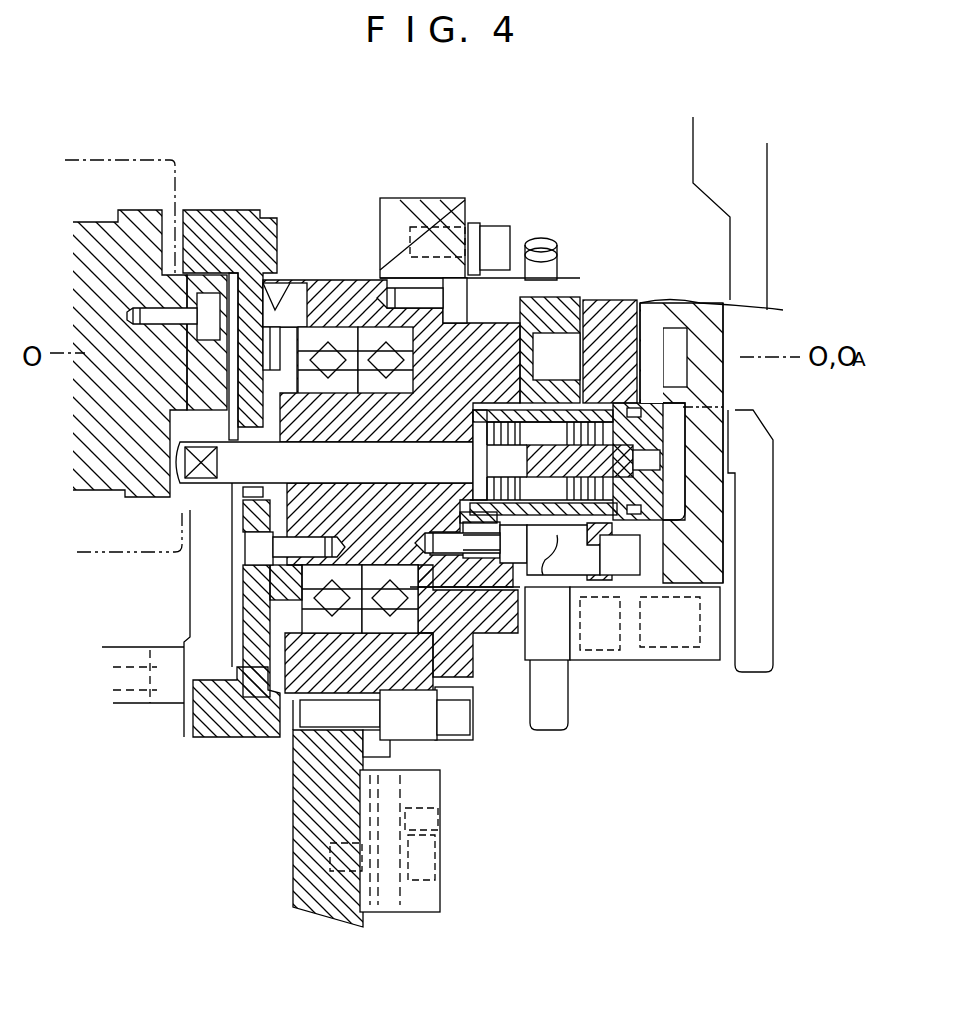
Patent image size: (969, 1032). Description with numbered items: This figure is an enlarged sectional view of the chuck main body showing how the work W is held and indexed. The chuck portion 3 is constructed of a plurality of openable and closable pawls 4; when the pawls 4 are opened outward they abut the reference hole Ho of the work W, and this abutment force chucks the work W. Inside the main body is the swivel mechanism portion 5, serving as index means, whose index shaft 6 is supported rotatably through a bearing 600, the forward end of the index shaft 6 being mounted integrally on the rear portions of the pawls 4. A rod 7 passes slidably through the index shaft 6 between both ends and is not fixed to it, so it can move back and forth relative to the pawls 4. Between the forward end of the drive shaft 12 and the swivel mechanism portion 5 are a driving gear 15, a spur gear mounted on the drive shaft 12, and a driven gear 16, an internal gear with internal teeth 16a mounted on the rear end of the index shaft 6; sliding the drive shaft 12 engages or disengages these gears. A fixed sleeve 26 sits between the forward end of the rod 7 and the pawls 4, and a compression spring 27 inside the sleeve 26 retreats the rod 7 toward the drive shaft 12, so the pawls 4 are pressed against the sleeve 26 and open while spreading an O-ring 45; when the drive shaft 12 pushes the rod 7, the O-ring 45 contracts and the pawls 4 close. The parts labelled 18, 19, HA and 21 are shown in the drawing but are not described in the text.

The drive shaft 12 is at (97, 233).
The driving gear 15 is at (185, 378).
The driven gear 16 is at (197, 215).
The internal teeth 16a is at (200, 657).
The bearing support 18 is at (248, 193).
The bearing support 19 is at (248, 193).
The bearing 600 is at (315, 337).
The rod 7 is at (227, 475).
The swivel mechanism portion 5 is at (223, 508).
The index shaft 6 is at (243, 553).
The fixed sleeve 26 is at (485, 517).
The compression spring 27 is at (542, 417).
The pawls 4 is at (653, 400).
The housing surface HA is at (727, 334).
The upright member 21 is at (767, 245).
The chuck portion 3 is at (693, 440).
The work W is at (640, 583).
The reference hole Ho is at (677, 523).
The O-ring 45 is at (650, 520).